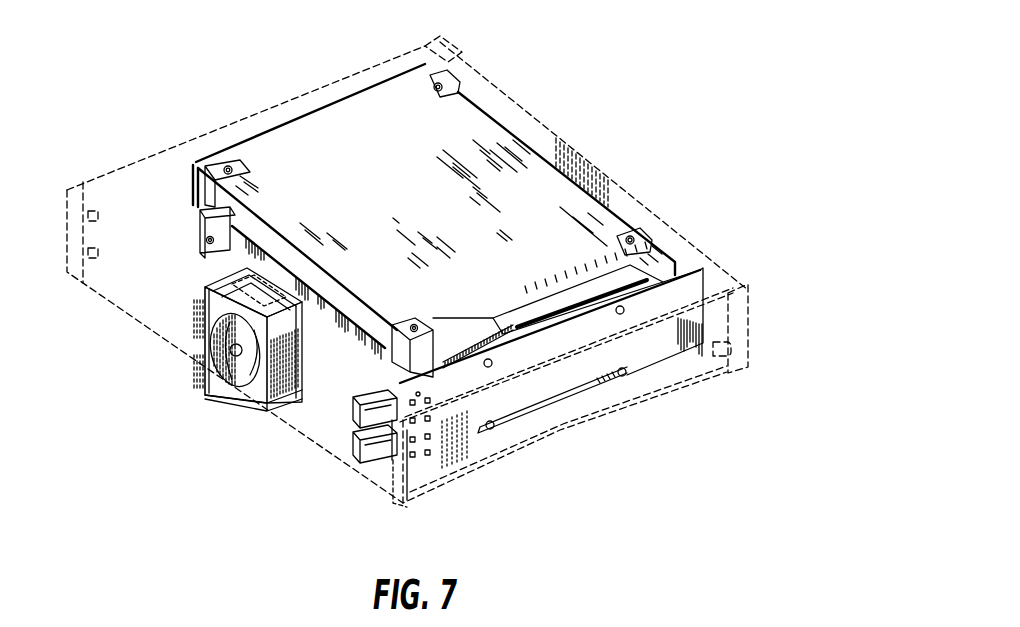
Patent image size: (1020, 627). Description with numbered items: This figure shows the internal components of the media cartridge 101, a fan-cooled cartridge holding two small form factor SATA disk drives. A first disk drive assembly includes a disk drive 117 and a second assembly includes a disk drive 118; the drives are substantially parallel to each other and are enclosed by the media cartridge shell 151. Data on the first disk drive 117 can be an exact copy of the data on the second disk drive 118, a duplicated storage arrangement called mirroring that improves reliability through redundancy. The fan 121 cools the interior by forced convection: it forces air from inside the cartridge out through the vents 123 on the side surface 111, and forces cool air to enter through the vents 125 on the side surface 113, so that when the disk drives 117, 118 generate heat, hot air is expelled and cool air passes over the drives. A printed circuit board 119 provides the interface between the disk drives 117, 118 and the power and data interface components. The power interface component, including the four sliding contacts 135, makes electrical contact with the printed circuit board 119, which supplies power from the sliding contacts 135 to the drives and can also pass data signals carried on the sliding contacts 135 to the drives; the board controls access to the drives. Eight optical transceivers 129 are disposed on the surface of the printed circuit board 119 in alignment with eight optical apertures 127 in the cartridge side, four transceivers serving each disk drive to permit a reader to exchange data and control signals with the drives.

The media cartridge 101 is at (630, 52).
The side surface 111 is at (157, 318).
The side surface 113 is at (500, 92).
The disk drive 117 is at (192, 178).
The disk drive 118 is at (195, 223).
The printed circuit board 119 is at (712, 273).
The fan 121 is at (237, 400).
The vents 123 is at (205, 348).
The vents 125 is at (613, 187).
The optical apertures 127 is at (473, 467).
The optical transceivers 129 is at (410, 447).
The sliding contacts 135 is at (360, 452).
The media cartridge shell 151 is at (320, 90).